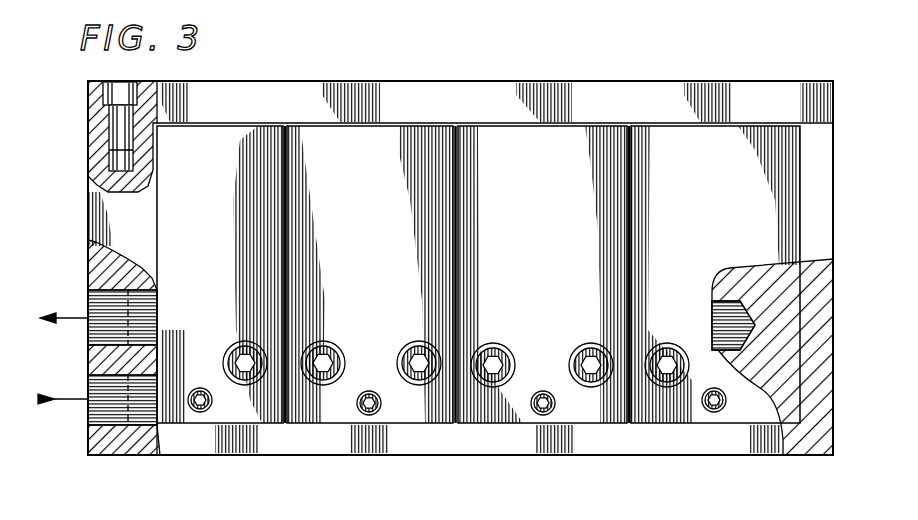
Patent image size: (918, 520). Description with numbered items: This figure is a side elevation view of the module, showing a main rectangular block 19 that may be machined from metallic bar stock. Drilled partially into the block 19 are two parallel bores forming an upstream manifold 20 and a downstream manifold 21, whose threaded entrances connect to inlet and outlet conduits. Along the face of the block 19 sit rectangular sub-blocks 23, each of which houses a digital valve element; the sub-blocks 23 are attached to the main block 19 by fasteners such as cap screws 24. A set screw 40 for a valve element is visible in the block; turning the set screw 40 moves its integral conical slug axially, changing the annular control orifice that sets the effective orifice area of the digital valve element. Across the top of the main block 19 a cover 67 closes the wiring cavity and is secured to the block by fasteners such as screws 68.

The main rectangular block 19 is at (833, 330).
The upstream manifold 20 is at (142, 413).
The downstream manifold 21 is at (88, 302).
The rectangular sub-blocks 23 is at (292, 425).
The cap screws 24 is at (322, 342).
The set screw 40 is at (718, 413).
The cover 67 is at (575, 82).
The screws 68 is at (134, 81).